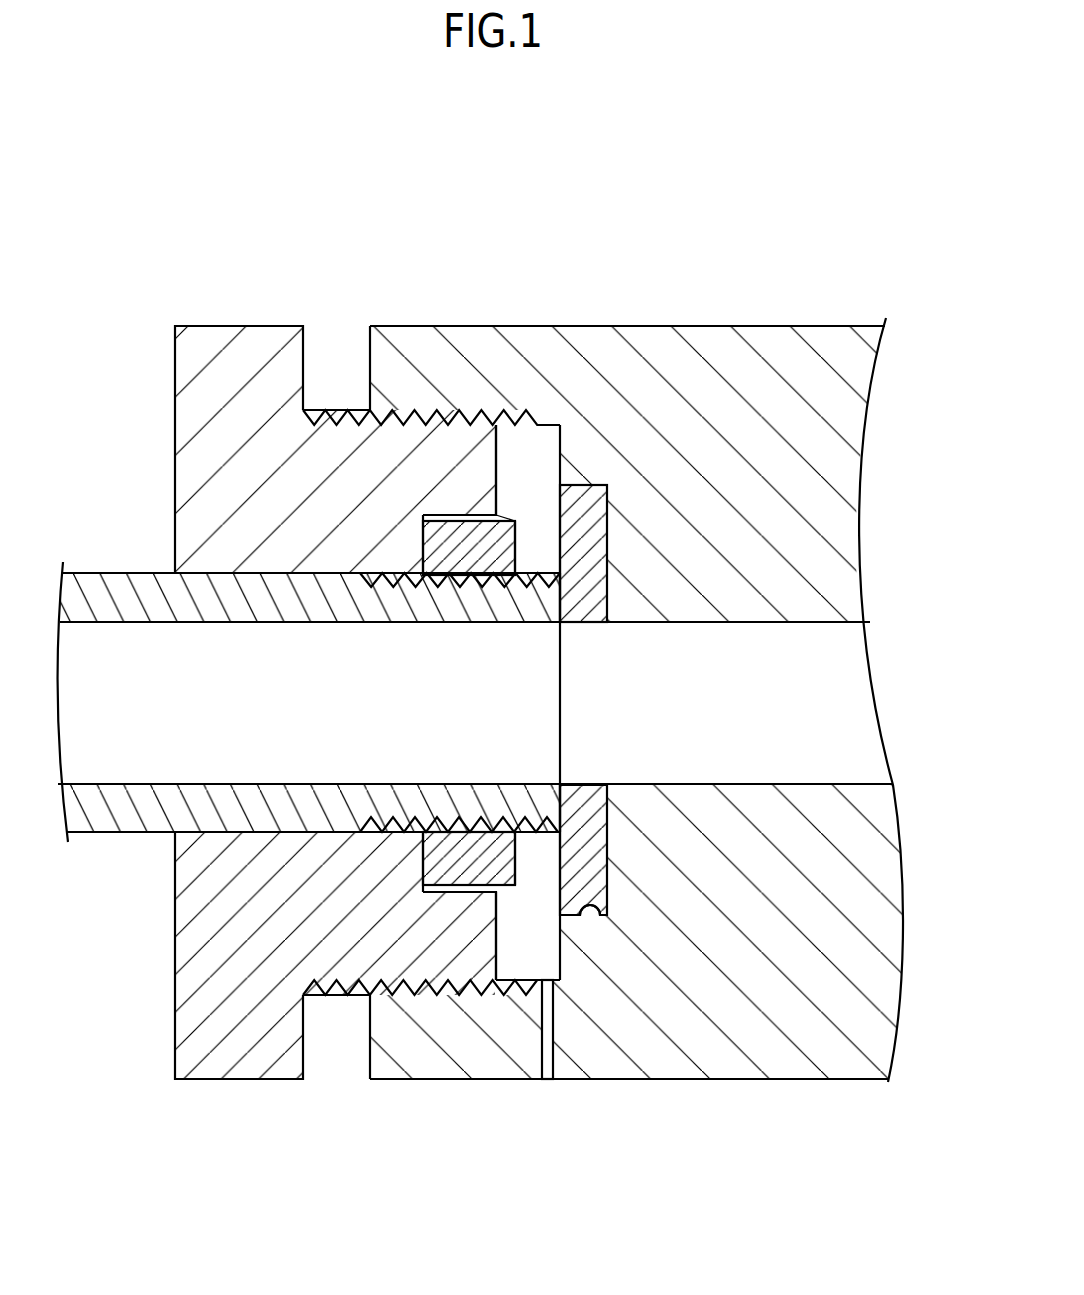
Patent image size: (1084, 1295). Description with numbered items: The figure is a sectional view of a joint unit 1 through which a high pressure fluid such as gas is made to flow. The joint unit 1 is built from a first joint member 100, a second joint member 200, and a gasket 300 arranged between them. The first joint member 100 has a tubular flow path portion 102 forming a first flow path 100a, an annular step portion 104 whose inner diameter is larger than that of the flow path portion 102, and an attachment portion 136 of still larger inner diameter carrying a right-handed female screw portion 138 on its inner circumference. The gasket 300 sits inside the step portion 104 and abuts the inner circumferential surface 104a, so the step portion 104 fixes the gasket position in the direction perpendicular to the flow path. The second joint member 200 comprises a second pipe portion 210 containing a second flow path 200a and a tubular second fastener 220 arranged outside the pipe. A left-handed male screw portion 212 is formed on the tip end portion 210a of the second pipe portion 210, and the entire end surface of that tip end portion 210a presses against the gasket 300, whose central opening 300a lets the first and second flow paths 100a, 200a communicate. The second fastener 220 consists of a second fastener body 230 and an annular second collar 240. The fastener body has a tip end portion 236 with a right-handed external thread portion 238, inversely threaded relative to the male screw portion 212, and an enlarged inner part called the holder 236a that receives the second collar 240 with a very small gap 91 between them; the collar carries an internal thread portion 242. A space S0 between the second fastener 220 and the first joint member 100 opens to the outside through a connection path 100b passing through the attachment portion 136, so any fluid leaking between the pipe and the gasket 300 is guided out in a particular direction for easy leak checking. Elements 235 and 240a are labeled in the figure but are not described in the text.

The joint unit 1 is at (188, 110).
The second joint member 200 is at (143, 193).
The second pipe portion 210 is at (112, 573).
The tip end portion 210a is at (548, 605).
The male screw portion 212 is at (487, 816).
The second flow path 200a is at (233, 720).
The second fastener 220 is at (445, 236).
The second fastener body 230 is at (265, 380).
The second collar 240 is at (458, 521).
The end face of pressing portion 240a is at (503, 521).
The tip end portion 236 is at (442, 472).
The holder 236a is at (482, 521).
The internal thread portion 242 is at (437, 818).
The recess of nut 235 is at (420, 880).
The external thread portion 238 is at (327, 982).
The gap 91 is at (508, 508).
The gasket 300 is at (552, 507).
The opening 300a is at (585, 697).
The space S0 is at (545, 930).
The first joint member 100 is at (723, 240).
The flow path portion 102 is at (715, 365).
The first flow path 100a is at (808, 723).
The connection path 100b is at (548, 1080).
The attachment portion 136 is at (517, 360).
The female screw portion 138 is at (427, 995).
The step portion 104 is at (583, 485).
The inner circumferential surface 104a is at (573, 922).